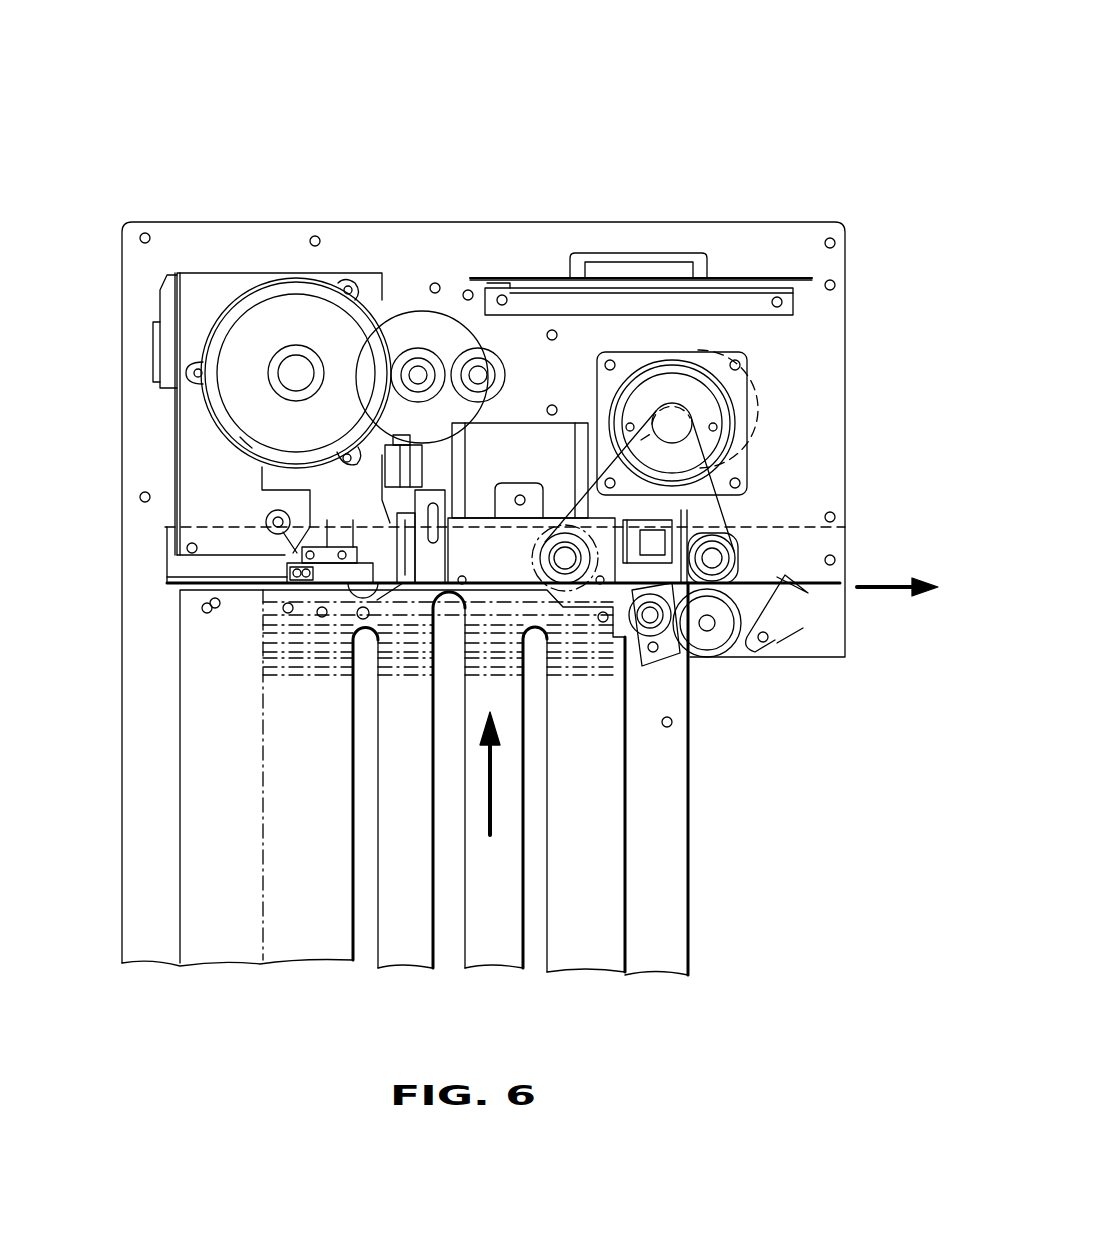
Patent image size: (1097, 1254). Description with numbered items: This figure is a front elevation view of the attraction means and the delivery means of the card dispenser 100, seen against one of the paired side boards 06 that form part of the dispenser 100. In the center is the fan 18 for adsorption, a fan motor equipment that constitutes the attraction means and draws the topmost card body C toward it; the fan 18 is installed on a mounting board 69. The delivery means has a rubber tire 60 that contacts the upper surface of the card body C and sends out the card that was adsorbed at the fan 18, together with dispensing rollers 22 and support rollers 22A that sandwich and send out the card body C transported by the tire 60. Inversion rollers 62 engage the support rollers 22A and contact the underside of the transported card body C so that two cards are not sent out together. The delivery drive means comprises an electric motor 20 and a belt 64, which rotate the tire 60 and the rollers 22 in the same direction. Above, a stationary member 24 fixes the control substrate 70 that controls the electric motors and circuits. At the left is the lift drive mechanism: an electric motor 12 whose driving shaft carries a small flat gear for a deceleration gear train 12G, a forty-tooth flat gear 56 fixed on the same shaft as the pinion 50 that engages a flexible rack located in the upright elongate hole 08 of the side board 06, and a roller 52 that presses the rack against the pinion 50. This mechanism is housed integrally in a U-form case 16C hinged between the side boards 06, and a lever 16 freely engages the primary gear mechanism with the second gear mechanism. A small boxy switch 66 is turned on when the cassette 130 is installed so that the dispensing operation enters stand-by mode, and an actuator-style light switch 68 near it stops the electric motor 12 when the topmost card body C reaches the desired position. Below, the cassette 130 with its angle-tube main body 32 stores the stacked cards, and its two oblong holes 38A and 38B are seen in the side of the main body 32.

The dispenser 100 is at (752, 82).
The electric motor 12 is at (288, 268).
The deceleration gear train 12G is at (250, 308).
The lever 16 is at (155, 355).
The U-form case 16C is at (198, 315).
The pinion 50 is at (407, 357).
The roller 52 is at (460, 355).
The flat gear 56 is at (418, 316).
The stationary member 24 is at (770, 300).
The substrate 70 is at (750, 255).
The fan 18 is at (510, 405).
The light switch 68 is at (390, 572).
The switch 66 is at (268, 519).
The mounting board 69 is at (223, 577).
The tire 60 is at (548, 552).
The electric motor 20 is at (768, 390).
The belt 64 is at (702, 352).
The rollers 22 is at (762, 535).
The support rollers 22A is at (740, 660).
The inversion rollers 62 is at (672, 652).
The main body 32 is at (200, 862).
The side boards 06 is at (150, 778).
The card body C is at (297, 642).
The oblong hole 38A is at (355, 942).
The oblong hole 38B is at (547, 950).
The upright elongate holes 08 is at (460, 943).
The cassette 130 is at (605, 778).